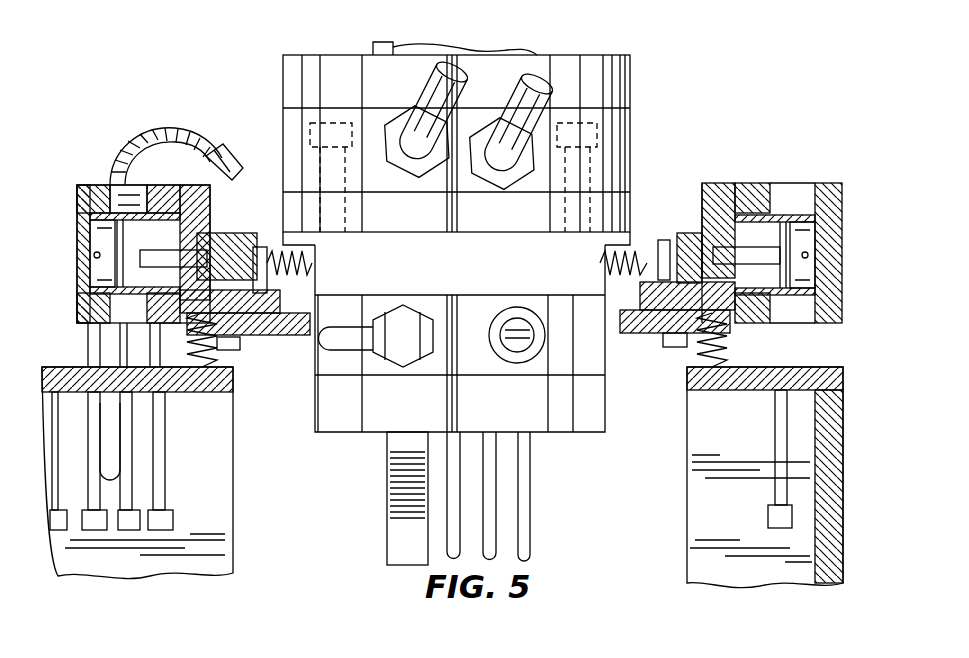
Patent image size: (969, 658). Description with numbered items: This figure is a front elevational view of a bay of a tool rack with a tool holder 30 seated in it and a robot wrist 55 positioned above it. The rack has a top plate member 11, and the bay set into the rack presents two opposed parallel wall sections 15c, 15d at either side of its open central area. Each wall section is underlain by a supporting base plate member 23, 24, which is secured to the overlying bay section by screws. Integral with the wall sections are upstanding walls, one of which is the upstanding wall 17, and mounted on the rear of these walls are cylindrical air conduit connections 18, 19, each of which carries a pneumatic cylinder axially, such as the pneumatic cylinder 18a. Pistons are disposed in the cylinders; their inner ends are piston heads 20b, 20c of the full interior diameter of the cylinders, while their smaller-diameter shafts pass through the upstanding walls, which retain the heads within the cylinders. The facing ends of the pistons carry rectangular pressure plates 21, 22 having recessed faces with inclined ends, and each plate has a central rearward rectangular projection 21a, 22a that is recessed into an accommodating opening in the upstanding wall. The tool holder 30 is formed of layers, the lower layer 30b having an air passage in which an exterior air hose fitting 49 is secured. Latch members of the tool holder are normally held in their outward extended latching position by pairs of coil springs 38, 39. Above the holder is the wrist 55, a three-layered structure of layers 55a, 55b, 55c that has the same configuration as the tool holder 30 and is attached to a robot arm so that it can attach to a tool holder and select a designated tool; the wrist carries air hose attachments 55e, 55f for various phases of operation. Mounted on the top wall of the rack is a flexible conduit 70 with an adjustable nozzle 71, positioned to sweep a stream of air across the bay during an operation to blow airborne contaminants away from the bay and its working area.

The top plate member 11 is at (235, 377).
The parallel wall section 15c is at (193, 197).
The parallel wall section 15d is at (715, 187).
The upstanding wall 17 is at (765, 183).
The cylindrical air conduit connection 18 is at (100, 183).
The pneumatic cylinder 18a is at (84, 240).
The cylindrical air conduit connection 19 is at (830, 183).
The piston head 20b is at (80, 240).
The piston head 20c is at (812, 249).
The pressure plate 21 is at (223, 240).
The rearward rectangular projection 21a is at (187, 350).
The pressure plate 22 is at (692, 233).
The rearward rectangular projection 22a is at (753, 327).
The supporting base plate member 23 is at (280, 336).
The supporting base plate member 24 is at (650, 337).
The tool holder 30 is at (461, 405).
The layer 30b is at (310, 370).
The coil springs 38 is at (275, 253).
The coil springs 39 is at (635, 253).
The exterior air hose fitting 49 is at (355, 350).
The wrist 55 is at (518, 132).
The layer 55a is at (630, 72).
The layer 55b is at (630, 148).
The layer 55c is at (537, 219).
The air hose attachment 55e is at (437, 70).
The air hose attachment 55f is at (560, 95).
The flexible conduit 70 is at (143, 133).
The adjustable nozzle 71 is at (214, 140).